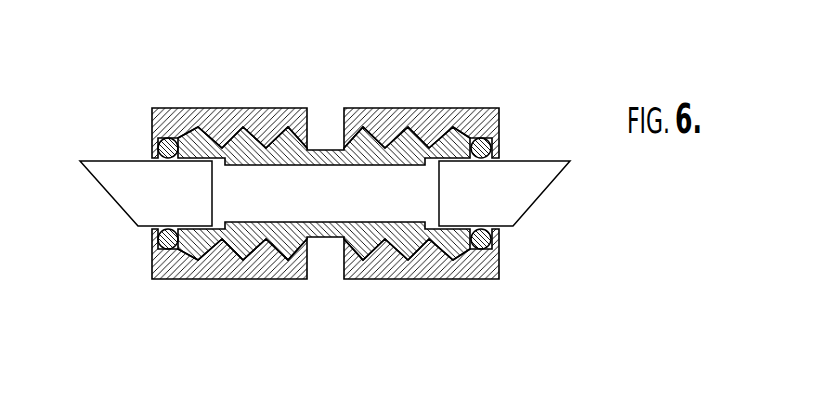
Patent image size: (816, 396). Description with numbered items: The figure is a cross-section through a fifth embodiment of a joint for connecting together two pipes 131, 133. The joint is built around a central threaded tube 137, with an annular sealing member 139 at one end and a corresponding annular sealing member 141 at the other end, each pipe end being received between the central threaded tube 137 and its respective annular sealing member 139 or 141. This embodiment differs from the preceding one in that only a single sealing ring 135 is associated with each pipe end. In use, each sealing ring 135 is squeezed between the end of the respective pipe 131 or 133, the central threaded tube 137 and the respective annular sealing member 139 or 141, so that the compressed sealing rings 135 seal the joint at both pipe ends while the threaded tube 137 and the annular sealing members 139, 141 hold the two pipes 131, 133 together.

The pipe 131 is at (138, 188).
The pipe 133 is at (515, 191).
The sealing ring 135 is at (171, 141).
The central threaded tube 137 is at (327, 152).
The annular sealing member 139 is at (243, 112).
The annular sealing member 141 is at (420, 115).